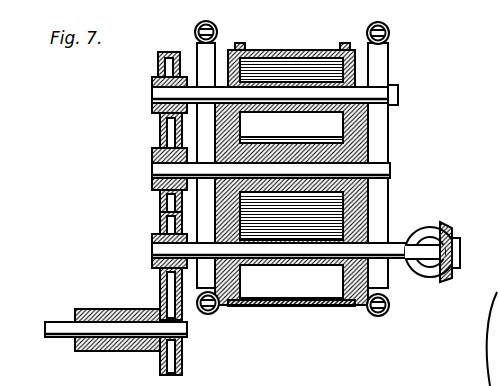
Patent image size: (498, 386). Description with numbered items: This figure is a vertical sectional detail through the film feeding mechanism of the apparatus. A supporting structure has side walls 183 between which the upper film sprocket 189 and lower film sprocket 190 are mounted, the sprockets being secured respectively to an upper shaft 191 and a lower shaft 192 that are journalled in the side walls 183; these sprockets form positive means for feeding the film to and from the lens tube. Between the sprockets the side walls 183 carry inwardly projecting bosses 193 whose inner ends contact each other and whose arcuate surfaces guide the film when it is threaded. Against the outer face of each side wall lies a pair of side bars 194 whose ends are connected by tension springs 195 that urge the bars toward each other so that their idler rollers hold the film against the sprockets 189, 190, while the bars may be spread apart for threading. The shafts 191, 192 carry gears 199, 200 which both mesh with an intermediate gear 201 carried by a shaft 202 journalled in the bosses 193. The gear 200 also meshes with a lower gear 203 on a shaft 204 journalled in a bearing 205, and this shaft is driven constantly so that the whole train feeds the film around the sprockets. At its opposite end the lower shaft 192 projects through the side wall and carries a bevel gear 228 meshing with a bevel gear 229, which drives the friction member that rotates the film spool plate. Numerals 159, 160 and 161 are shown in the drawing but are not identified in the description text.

The shaft 159 is at (284, 377).
The gear 160 is at (211, 381).
The gear 161 is at (242, 377).
The side walls 183 is at (240, 118).
The film sprocket 189 is at (298, 50).
The film sprocket 190 is at (290, 306).
The upper shaft 191 is at (297, 106).
The lower shaft 192 is at (326, 258).
The bosses 193 is at (316, 232).
The side bars 194 is at (197, 60).
The tension springs 195 is at (217, 30).
The gear 199 is at (160, 70).
The gear 200 is at (160, 226).
The intermediate gear 201 is at (160, 200).
The shaft 202 is at (152, 170).
The lower gear 203 is at (160, 362).
The shaft 204 is at (132, 322).
The bearing 205 is at (90, 309).
The bevel gear 228 is at (447, 226).
The bevel gear 229 is at (412, 226).